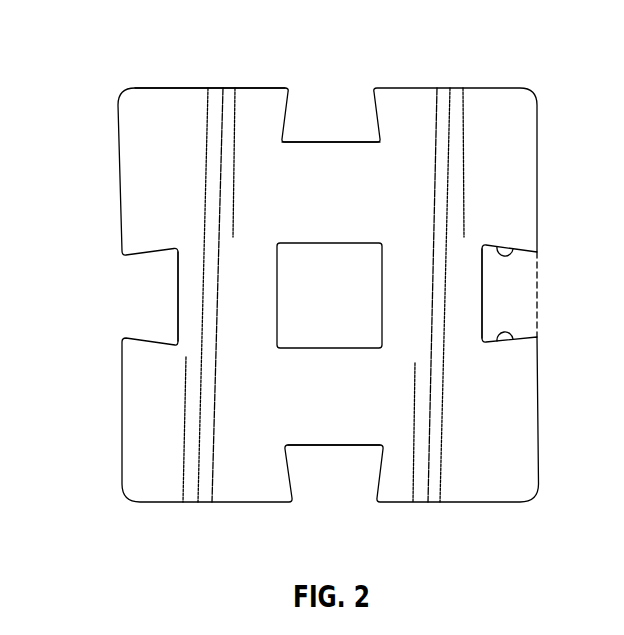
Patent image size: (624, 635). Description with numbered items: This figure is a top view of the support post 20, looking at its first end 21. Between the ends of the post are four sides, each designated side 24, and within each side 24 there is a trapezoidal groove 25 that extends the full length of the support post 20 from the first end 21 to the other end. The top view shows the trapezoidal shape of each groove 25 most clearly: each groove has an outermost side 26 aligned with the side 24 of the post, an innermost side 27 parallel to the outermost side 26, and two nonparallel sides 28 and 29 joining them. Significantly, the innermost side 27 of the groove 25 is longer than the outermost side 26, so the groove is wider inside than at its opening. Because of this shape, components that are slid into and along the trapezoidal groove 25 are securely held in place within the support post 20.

The support post 20 is at (315, 298).
The first end 21 is at (135, 164).
The side 24 is at (252, 88).
The trapezoidal groove 25 is at (340, 125).
The outermost side 26 is at (542, 322).
The innermost side 27 is at (482, 302).
The nonparallel side 28 is at (515, 250).
The nonparallel side 29 is at (510, 342).